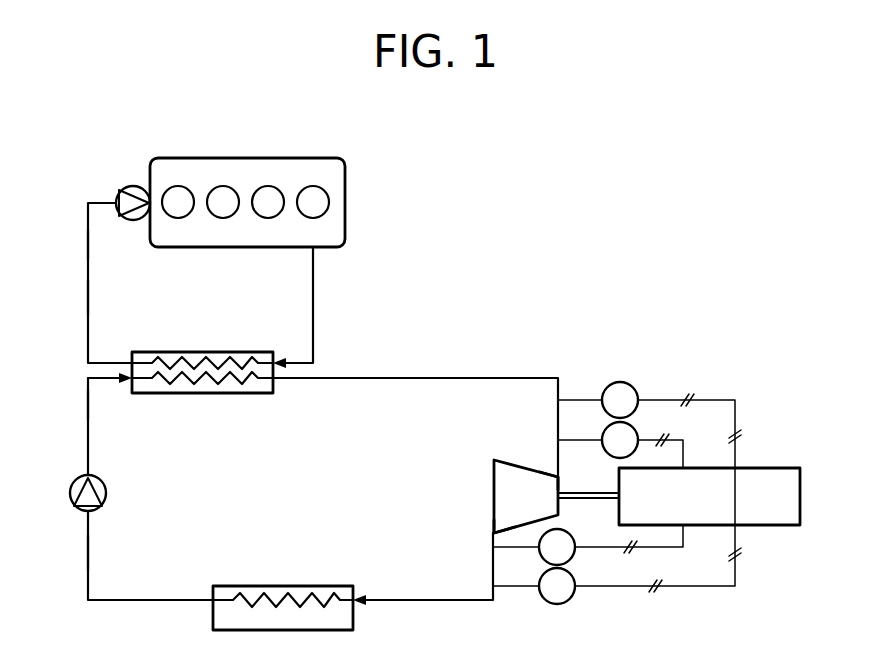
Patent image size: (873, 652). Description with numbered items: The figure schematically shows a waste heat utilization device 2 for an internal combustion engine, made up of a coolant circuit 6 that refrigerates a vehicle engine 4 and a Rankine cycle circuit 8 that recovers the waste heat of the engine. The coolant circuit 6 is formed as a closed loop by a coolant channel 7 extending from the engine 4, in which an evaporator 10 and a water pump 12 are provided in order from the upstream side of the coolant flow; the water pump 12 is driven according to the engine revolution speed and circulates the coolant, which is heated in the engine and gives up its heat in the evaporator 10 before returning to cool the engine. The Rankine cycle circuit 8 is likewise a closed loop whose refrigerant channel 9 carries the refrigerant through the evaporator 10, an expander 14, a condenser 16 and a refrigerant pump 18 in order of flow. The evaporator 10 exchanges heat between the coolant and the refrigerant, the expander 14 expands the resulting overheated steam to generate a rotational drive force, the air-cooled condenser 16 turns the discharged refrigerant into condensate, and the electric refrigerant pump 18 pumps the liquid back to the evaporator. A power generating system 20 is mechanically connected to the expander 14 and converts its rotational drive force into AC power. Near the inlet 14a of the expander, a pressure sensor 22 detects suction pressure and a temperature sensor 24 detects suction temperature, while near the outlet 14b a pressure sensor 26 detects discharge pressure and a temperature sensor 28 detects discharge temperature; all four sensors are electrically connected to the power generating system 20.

The waste heat utilization device 2 is at (494, 252).
The vehicle engine 4 is at (205, 158).
The coolant circuit 6 is at (88, 296).
The coolant channel 7 is at (88, 250).
The Rankine cycle circuit 8 is at (88, 404).
The refrigerant channel 9 is at (88, 553).
The evaporator 10 is at (173, 352).
The water pump 12 is at (135, 186).
The expander 14 is at (500, 493).
The inlet 14a is at (555, 475).
The outlet 14b is at (493, 533).
The condenser 16 is at (245, 586).
The refrigerant pump 18 is at (107, 483).
The power generating system 20 is at (803, 478).
The pressure sensor 22 is at (625, 382).
The temperature sensor 24 is at (635, 430).
The pressure sensor 26 is at (577, 553).
The temperature sensor 28 is at (570, 600).